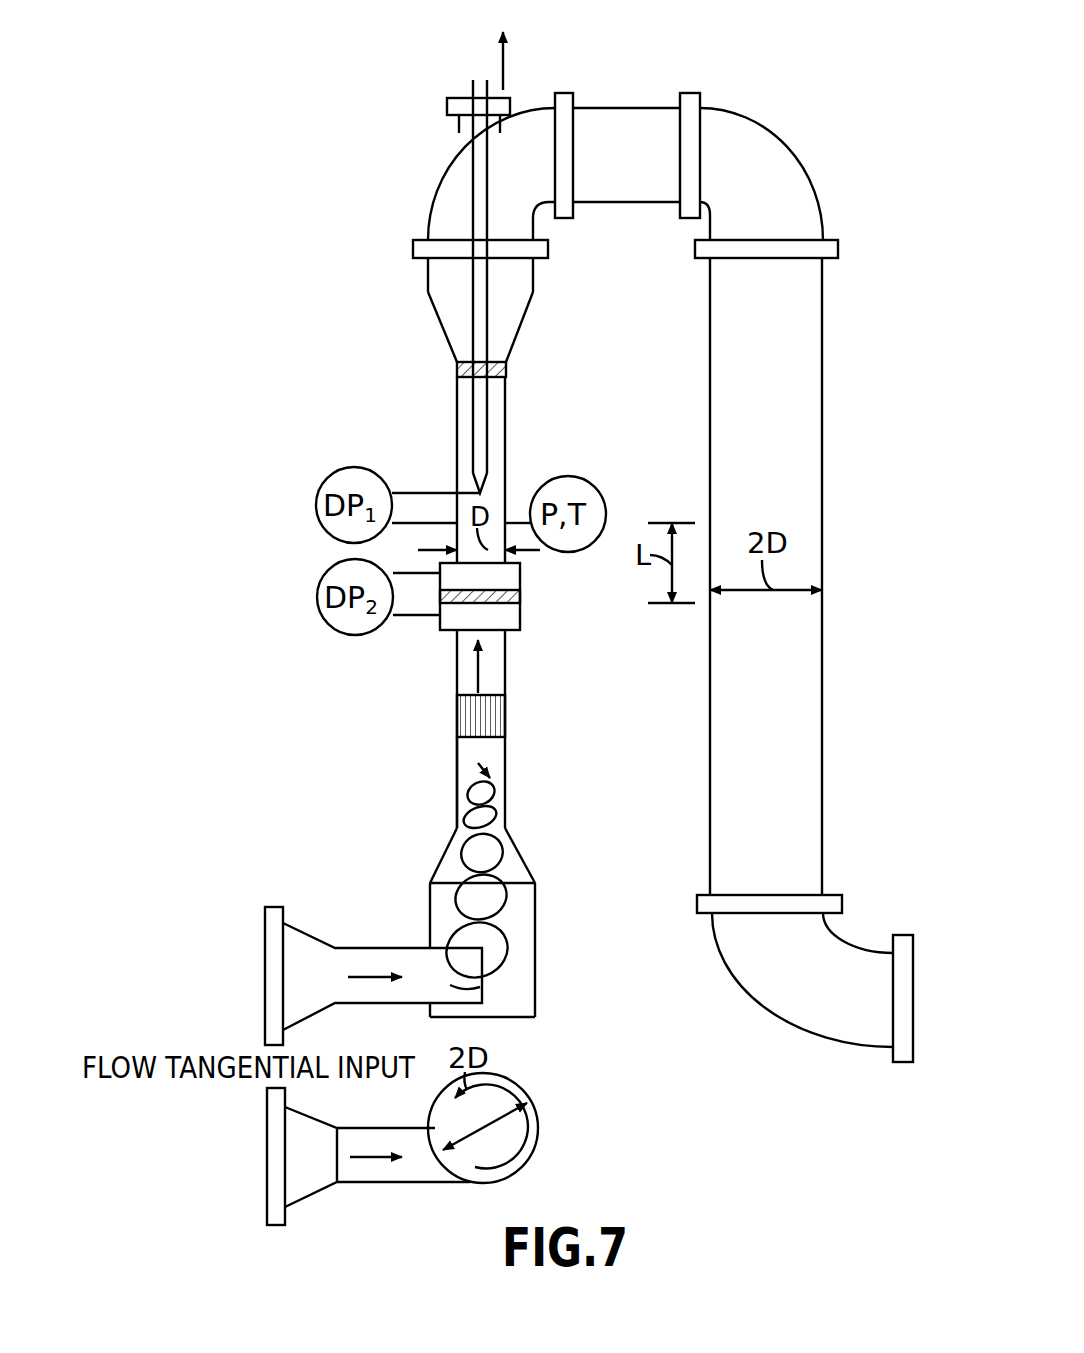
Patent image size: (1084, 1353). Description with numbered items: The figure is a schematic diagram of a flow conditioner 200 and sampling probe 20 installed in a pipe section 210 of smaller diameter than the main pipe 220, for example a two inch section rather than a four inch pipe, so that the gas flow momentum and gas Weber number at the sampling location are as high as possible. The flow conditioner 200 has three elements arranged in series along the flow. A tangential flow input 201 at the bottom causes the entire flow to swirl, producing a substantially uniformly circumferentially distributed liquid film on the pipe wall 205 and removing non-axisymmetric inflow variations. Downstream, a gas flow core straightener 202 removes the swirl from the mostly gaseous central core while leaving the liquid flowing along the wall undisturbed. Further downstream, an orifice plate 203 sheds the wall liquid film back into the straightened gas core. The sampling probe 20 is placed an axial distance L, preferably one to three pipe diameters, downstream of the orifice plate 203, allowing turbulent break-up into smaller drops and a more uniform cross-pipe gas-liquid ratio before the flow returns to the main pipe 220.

The sampling probe 20 is at (473, 440).
The flow conditioner 200 is at (466, 657).
The tangential flow input 201 is at (443, 942).
The gas flow core straightener 202 is at (457, 712).
The orifice plate 203 is at (462, 617).
The pipe wall 205 is at (457, 820).
The pipe section 210 is at (457, 757).
The main pipe 220 is at (822, 645).